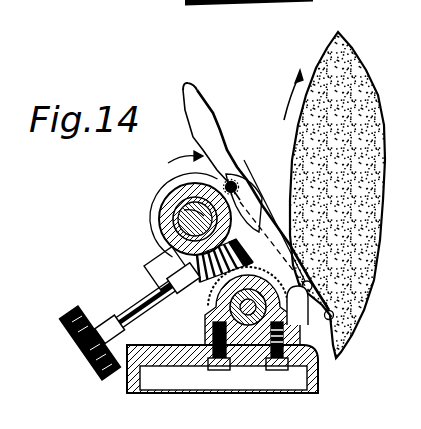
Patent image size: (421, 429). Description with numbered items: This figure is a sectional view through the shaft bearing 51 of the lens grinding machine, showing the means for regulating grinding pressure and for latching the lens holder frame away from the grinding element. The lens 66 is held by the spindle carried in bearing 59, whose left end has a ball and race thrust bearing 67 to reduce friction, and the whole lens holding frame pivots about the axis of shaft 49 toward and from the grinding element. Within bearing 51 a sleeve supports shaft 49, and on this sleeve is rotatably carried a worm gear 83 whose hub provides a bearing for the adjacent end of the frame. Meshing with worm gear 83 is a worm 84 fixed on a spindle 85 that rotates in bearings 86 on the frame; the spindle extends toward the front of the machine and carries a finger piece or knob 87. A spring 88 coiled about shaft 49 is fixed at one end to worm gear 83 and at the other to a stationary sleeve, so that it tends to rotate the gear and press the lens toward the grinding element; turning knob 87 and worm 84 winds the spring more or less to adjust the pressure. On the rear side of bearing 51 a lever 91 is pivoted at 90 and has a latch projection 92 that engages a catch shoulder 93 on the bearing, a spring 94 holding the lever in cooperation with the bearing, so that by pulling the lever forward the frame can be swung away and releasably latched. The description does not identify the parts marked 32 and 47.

The nozzle 32 is at (333, 41).
The lever 91 is at (209, 109).
The spring 94 is at (233, 173).
The catch shoulder 93 is at (252, 183).
The latch projection 92 is at (250, 200).
The lens 66 is at (158, 189).
The bearing 59 is at (159, 205).
The ball and race thrust bearing 67 is at (174, 223).
The worm 84 is at (196, 256).
The spring 88 is at (257, 262).
The bearings 86 is at (158, 282).
The spindle 85 is at (139, 312).
The finger piece or knob 87 is at (63, 311).
The worm gear 83 is at (206, 307).
The pivot 90 is at (306, 323).
The bearing 51 is at (206, 325).
The base 47 is at (173, 362).
The shaft 49 is at (281, 283).